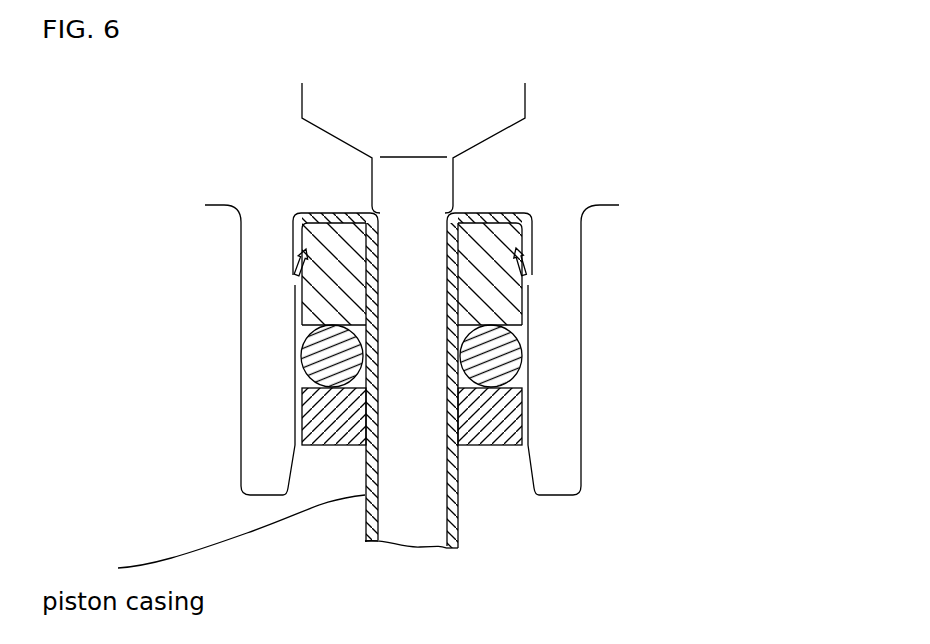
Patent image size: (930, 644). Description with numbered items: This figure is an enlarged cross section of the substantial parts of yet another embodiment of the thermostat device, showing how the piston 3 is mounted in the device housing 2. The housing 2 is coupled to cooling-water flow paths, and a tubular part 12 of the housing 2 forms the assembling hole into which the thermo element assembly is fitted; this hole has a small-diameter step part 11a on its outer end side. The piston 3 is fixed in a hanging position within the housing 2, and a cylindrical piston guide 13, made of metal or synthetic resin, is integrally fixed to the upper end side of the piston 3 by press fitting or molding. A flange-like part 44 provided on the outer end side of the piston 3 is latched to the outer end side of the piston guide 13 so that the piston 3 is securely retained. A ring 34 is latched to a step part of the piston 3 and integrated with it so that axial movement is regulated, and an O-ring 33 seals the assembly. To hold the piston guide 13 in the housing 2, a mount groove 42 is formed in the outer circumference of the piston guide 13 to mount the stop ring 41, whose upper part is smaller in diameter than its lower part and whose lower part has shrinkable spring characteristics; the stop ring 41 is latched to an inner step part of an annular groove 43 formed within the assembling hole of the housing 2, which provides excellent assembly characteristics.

The device housing 2 is at (243, 122).
The piston 3 is at (427, 510).
The small-diameter step part 11a is at (462, 183).
The tubular part 12 is at (257, 452).
The piston guide 13 is at (505, 307).
The O-ring 33 is at (300, 358).
The ring 34 is at (308, 420).
The stop ring 41 is at (530, 258).
The mount groove 42 is at (315, 277).
The annular groove 43 is at (292, 223).
The flange-like part 44 is at (485, 205).